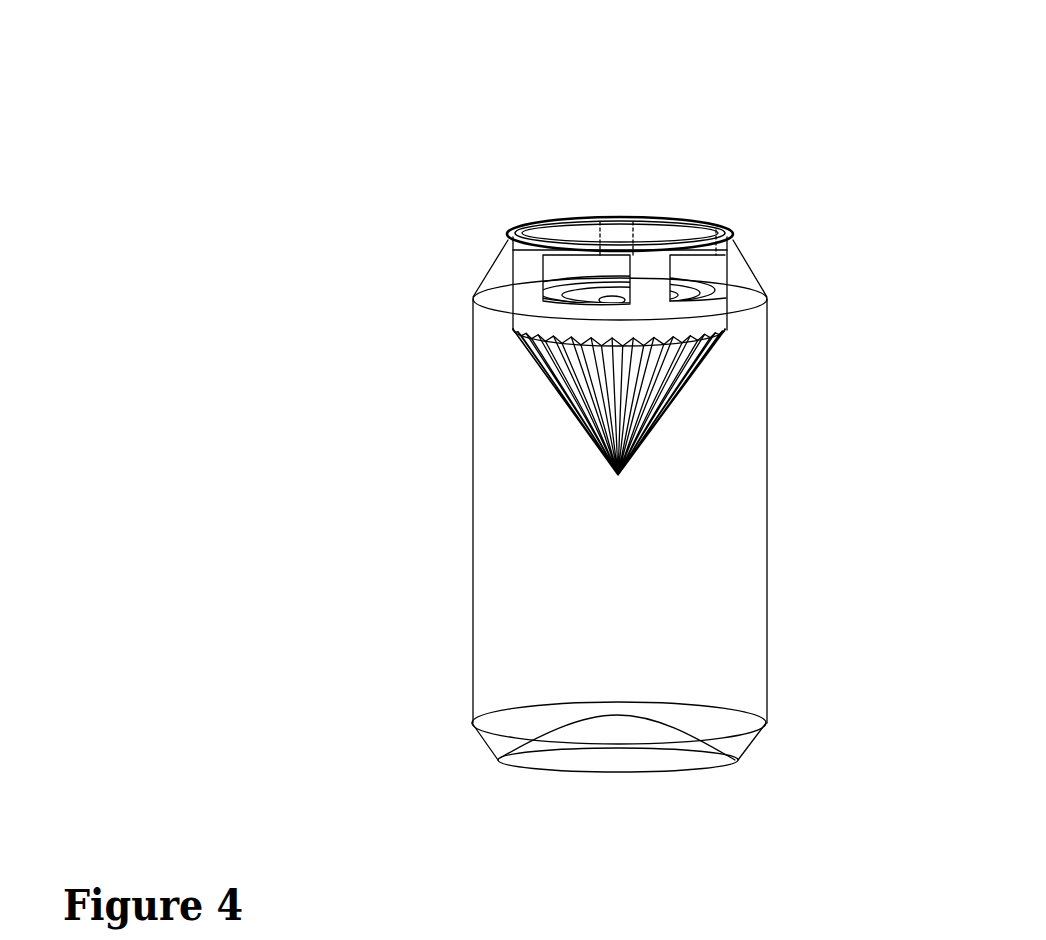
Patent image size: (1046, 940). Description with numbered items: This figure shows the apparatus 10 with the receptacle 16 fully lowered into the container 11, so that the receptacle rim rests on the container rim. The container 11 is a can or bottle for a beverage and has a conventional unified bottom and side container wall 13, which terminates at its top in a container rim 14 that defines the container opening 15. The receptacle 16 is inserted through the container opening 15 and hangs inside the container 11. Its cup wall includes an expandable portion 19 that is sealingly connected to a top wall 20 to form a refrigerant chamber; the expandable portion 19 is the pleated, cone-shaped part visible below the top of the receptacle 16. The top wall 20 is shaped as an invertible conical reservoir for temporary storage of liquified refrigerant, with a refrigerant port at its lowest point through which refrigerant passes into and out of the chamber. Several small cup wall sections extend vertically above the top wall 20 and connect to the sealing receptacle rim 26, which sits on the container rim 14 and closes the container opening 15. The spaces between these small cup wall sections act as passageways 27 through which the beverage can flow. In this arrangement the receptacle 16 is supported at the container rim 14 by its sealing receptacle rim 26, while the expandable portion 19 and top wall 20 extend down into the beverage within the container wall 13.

The apparatus 10 is at (624, 429).
The container 11 is at (768, 398).
The unified bottom and side container wall 13 is at (662, 773).
The container rim 14 is at (508, 236).
The container opening 15 is at (545, 222).
The receptacle 16 is at (688, 332).
The expandable portion 19 is at (552, 365).
The top wall 20 is at (712, 283).
The sealing receptacle rim 26 is at (510, 226).
The passageways 27 is at (563, 233).